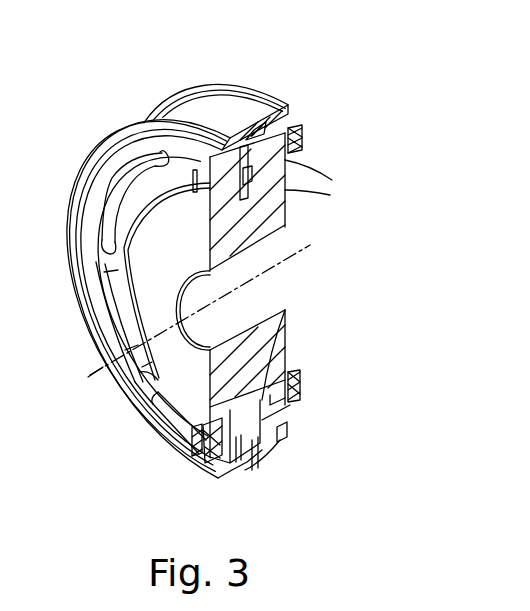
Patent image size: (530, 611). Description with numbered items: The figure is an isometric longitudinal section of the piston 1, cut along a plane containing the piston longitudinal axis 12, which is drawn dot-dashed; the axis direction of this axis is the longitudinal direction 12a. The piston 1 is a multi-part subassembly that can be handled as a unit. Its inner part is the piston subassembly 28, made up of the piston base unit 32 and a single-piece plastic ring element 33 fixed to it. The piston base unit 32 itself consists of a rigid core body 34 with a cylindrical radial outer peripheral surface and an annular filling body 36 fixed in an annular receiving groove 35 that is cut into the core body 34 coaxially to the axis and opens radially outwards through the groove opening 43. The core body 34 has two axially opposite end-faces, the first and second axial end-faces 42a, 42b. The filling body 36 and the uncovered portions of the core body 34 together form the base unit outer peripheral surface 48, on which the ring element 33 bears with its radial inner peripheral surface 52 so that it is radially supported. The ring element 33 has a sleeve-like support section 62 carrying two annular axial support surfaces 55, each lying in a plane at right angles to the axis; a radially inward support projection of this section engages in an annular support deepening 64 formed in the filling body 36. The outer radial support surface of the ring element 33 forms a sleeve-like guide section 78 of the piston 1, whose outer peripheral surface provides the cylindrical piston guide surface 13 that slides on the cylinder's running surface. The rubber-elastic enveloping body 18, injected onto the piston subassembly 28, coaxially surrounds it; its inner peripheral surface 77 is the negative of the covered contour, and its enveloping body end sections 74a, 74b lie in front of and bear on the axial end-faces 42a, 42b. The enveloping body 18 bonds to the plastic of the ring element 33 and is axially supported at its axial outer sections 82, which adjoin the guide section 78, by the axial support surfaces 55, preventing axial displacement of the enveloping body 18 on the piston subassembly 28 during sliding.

The piston 1 is at (95, 110).
The piston longitudinal axis 12 is at (103, 367).
The longitudinal direction 12a is at (95, 372).
The piston guide surface 13 is at (212, 253).
The enveloping body 18 is at (162, 455).
The piston subassembly 28 is at (268, 207).
The piston base unit 32 is at (275, 424).
The ring element 33 is at (250, 442).
The core body 34 is at (266, 253).
The annular receiving groove 35 is at (235, 455).
The annular filling body 36 is at (237, 440).
The first axial end-face 42a is at (215, 428).
The second axial end-face 42b is at (302, 386).
The groove opening 43 is at (122, 303).
The base unit outer peripheral surface 48 is at (272, 450).
The radial inner peripheral surface 52 is at (240, 150).
The axial support surface 55 is at (192, 136).
The sleeve-like support section 62 is at (262, 125).
The support deepening 64 is at (262, 405).
The enveloping body end section 74a is at (105, 250).
The enveloping body end section 74b is at (300, 139).
The inner peripheral surface 77 is at (192, 428).
The guide section 78 is at (245, 158).
The axial outer sections 82 is at (195, 128).